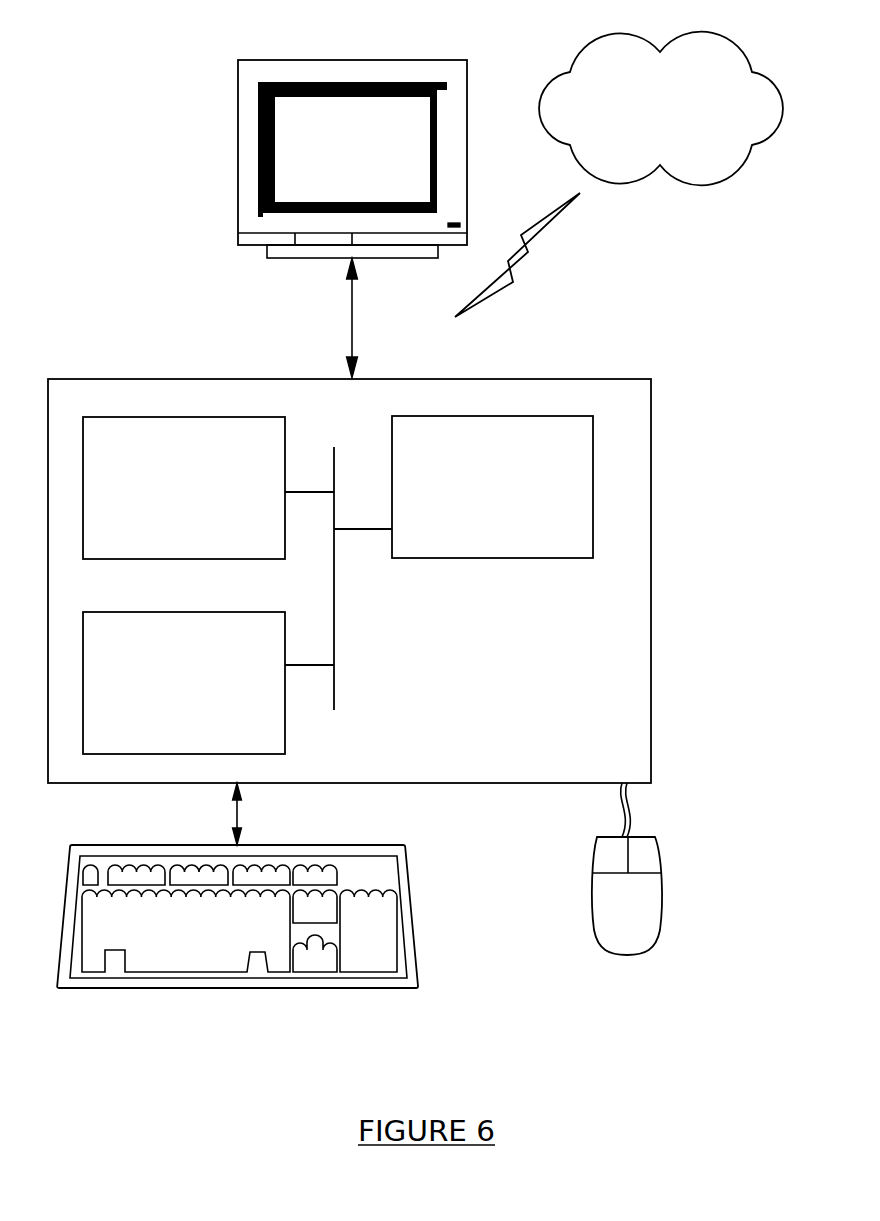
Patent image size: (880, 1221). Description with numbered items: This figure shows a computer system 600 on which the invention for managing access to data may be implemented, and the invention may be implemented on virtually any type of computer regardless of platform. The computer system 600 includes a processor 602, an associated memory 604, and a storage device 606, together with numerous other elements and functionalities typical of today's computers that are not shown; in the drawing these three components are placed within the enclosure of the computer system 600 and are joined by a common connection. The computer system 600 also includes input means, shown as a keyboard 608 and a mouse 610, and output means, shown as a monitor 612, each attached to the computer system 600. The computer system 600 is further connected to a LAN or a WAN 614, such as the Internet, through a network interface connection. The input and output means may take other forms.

The computer system 600 is at (684, 588).
The processor 602 is at (471, 501).
The memory 604 is at (164, 498).
The storage device 606 is at (162, 695).
The keyboard 608 is at (158, 953).
The mouse 610 is at (606, 911).
The monitor 612 is at (332, 166).
The LAN or WAN 614 is at (634, 130).